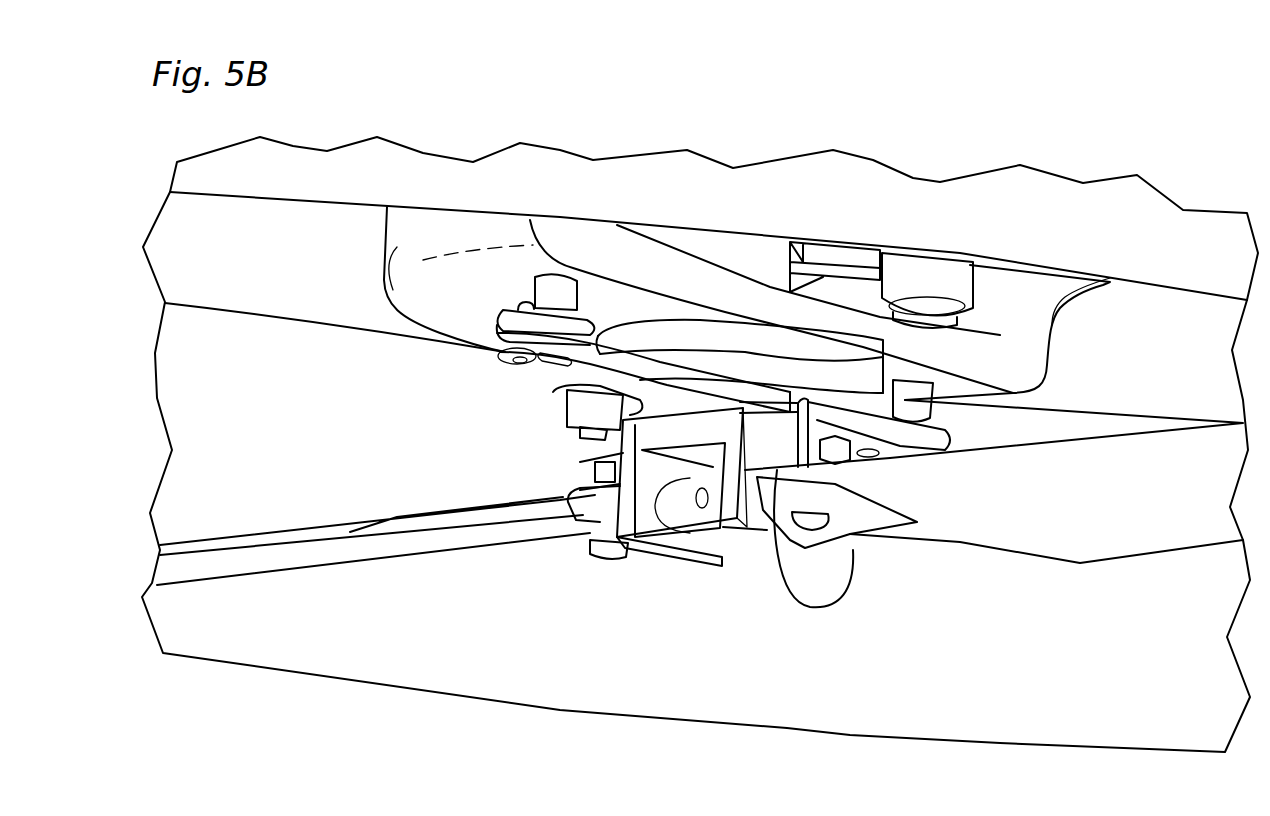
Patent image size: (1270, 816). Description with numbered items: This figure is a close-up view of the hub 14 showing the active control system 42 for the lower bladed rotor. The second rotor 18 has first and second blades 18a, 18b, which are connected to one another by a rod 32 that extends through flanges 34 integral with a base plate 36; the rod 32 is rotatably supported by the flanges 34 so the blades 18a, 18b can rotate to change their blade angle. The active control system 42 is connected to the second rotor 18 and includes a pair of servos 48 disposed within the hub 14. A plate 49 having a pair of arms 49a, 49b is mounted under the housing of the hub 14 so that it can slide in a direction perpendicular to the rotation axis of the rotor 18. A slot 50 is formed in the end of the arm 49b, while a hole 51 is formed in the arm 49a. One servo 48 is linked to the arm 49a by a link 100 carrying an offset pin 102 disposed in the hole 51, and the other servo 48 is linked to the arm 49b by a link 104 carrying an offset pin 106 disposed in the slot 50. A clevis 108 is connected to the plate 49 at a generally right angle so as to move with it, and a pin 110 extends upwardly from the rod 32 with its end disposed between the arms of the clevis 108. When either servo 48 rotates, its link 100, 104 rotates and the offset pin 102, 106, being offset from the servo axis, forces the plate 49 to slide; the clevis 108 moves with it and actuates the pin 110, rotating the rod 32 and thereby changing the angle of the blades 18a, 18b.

The hub 14 is at (397, 247).
The second rotor 18 is at (543, 583).
The first blade 18a is at (1117, 562).
The second blade 18b is at (332, 567).
The rod 32 is at (695, 535).
The flanges 34 is at (667, 557).
The base plate 36 is at (670, 433).
The active control system 42 is at (497, 400).
The servos 48 is at (980, 290).
The plate 49 is at (762, 410).
The arm 49a is at (850, 417).
The arm 49b is at (600, 353).
The slot 50 is at (545, 365).
The hole 51 is at (888, 462).
The link 100 is at (946, 440).
The offset pin 102 is at (895, 388).
The link 104 is at (500, 323).
The offset pin 106 is at (543, 365).
The clevis 108 is at (805, 398).
The pin 110 is at (830, 598).